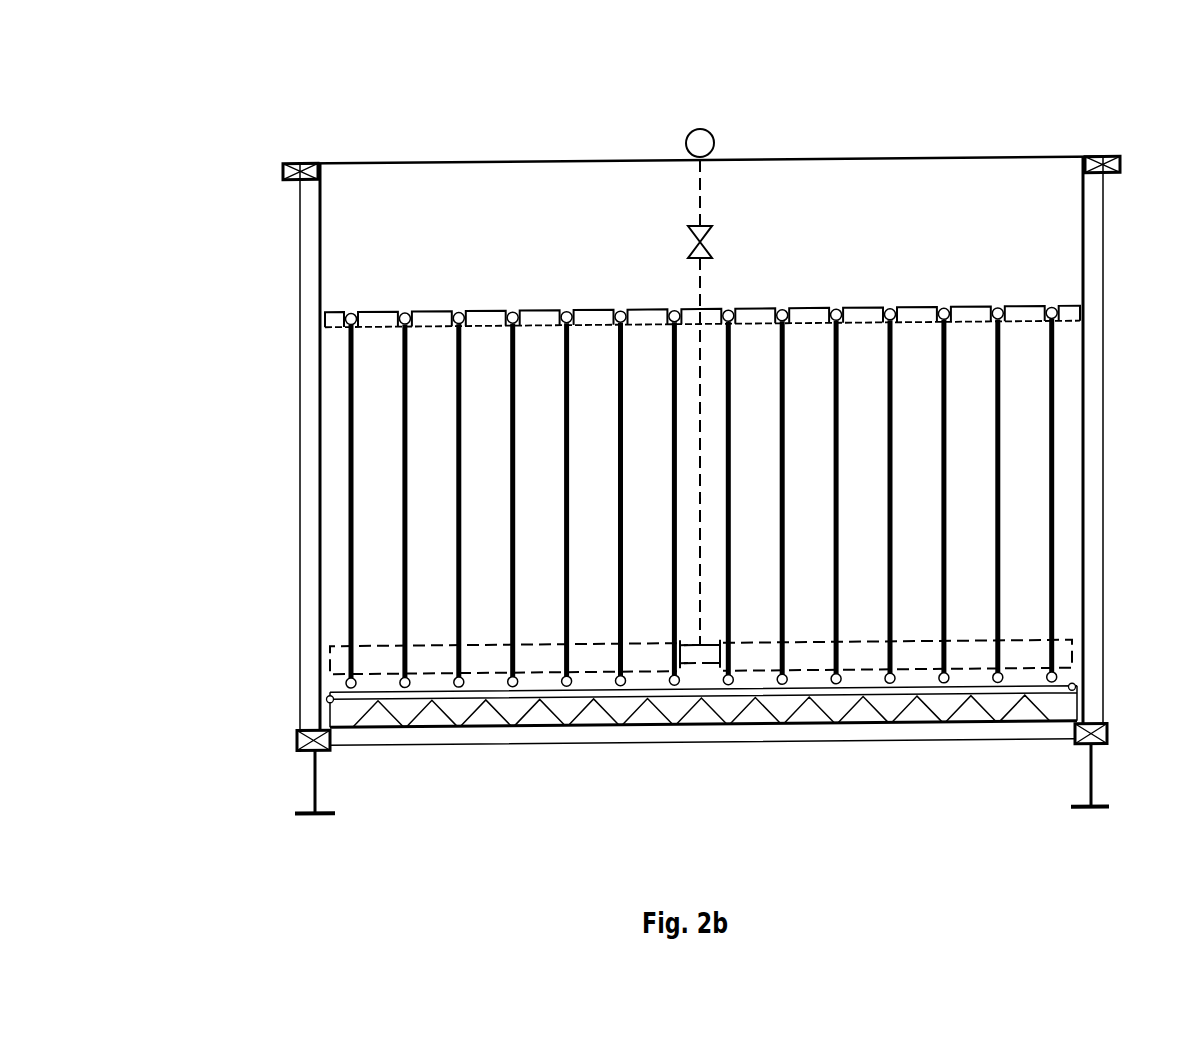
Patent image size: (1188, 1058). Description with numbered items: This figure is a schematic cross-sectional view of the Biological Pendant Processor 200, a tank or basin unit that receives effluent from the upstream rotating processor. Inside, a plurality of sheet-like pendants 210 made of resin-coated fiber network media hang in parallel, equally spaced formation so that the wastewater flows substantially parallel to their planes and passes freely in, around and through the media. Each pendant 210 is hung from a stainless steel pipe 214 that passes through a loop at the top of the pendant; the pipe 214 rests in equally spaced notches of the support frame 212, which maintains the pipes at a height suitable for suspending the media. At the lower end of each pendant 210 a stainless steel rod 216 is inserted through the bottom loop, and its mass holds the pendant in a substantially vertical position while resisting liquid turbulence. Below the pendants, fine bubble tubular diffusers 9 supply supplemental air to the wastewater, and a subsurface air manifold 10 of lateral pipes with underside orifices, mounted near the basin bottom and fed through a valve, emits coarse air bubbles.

The Biological Pendant Processor 200 is at (161, 82).
The fine bubble tubular diffuser 9 is at (1072, 660).
The subsurface air manifold 10 is at (943, 698).
The sheet-like pendant 210 is at (564, 365).
The support frame 212 is at (428, 308).
The pipe 214 is at (568, 310).
The rod 216 is at (567, 690).